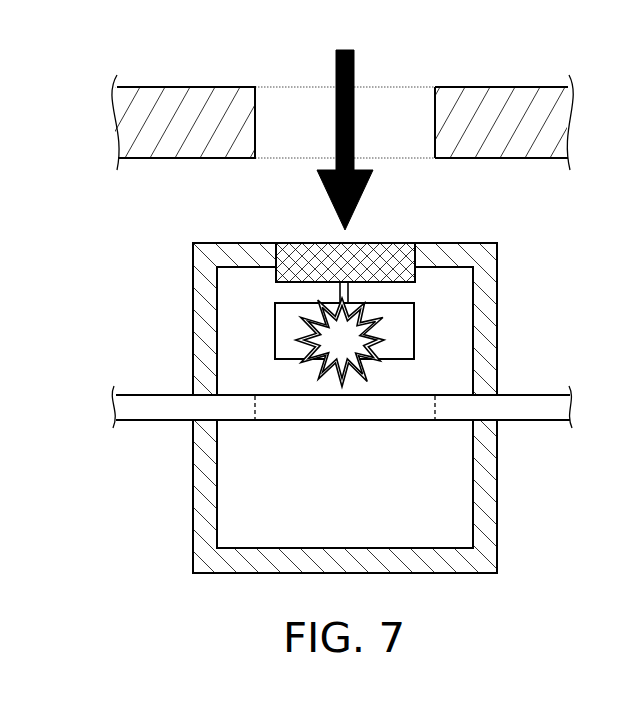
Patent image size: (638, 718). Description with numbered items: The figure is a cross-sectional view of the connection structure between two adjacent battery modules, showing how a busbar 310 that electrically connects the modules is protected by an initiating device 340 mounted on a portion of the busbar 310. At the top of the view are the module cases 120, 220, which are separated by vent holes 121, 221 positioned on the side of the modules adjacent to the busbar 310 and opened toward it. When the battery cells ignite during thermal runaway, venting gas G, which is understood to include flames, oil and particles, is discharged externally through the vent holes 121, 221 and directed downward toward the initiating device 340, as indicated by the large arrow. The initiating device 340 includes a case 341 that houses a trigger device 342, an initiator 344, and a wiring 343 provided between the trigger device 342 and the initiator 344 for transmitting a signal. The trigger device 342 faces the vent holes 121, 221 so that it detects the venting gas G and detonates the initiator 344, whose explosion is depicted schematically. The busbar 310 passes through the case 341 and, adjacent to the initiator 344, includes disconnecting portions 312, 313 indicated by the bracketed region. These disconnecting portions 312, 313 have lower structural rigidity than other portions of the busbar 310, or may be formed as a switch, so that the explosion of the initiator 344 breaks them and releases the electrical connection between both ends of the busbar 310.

The case 120 is at (332, 95).
The case 220 is at (530, 100).
The vent hole 121 is at (355, 89).
The vent hole 221 is at (386, 124).
The venting gas G is at (336, 65).
The initiating device 340 is at (319, 404).
The case 341 is at (487, 290).
The trigger device 342 is at (383, 252).
The wiring 343 is at (339, 295).
The initiator 344 is at (407, 330).
The busbar 310 is at (342, 435).
The disconnecting portion 312 is at (345, 439).
The disconnecting portion 313 is at (433, 436).